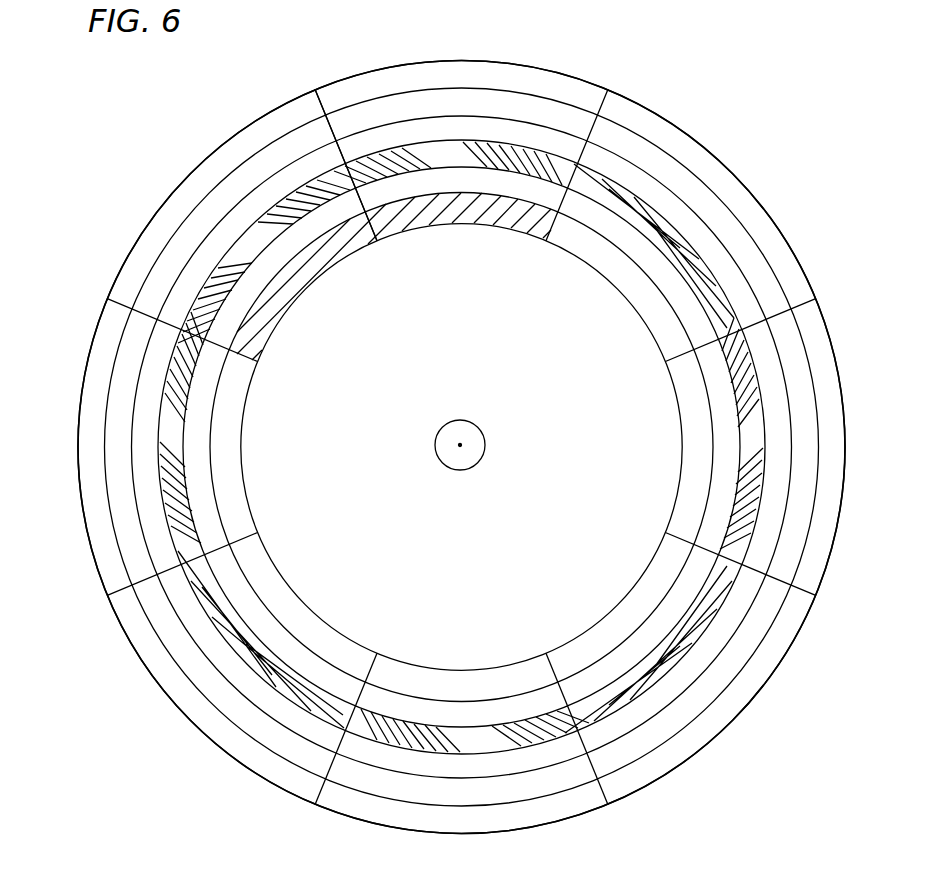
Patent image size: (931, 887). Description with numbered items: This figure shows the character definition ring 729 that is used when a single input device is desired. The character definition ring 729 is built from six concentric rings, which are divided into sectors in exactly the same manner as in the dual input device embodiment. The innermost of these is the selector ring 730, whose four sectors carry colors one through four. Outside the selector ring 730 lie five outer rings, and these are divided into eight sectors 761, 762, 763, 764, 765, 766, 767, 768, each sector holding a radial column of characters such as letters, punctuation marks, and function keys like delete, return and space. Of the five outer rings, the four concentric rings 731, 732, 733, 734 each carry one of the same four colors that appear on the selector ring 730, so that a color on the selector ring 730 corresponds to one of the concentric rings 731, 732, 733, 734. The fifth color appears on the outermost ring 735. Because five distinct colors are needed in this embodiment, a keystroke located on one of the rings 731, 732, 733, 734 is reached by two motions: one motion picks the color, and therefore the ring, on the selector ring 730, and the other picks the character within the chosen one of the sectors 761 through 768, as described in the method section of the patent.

The character definition ring 729 is at (180, 102).
The selector ring 730 is at (688, 515).
The concentric ring 731 is at (723, 470).
The concentric ring 732 is at (742, 387).
The concentric ring 733 is at (511, 765).
The concentric ring 734 is at (398, 793).
The outermost ring 735 is at (536, 821).
The sector 761 is at (613, 77).
The sector 762 is at (613, 77).
The sector 763 is at (827, 600).
The sector 764 is at (827, 600).
The sector 765 is at (613, 817).
The sector 766 is at (96, 600).
The sector 767 is at (96, 600).
The sector 768 is at (310, 77).